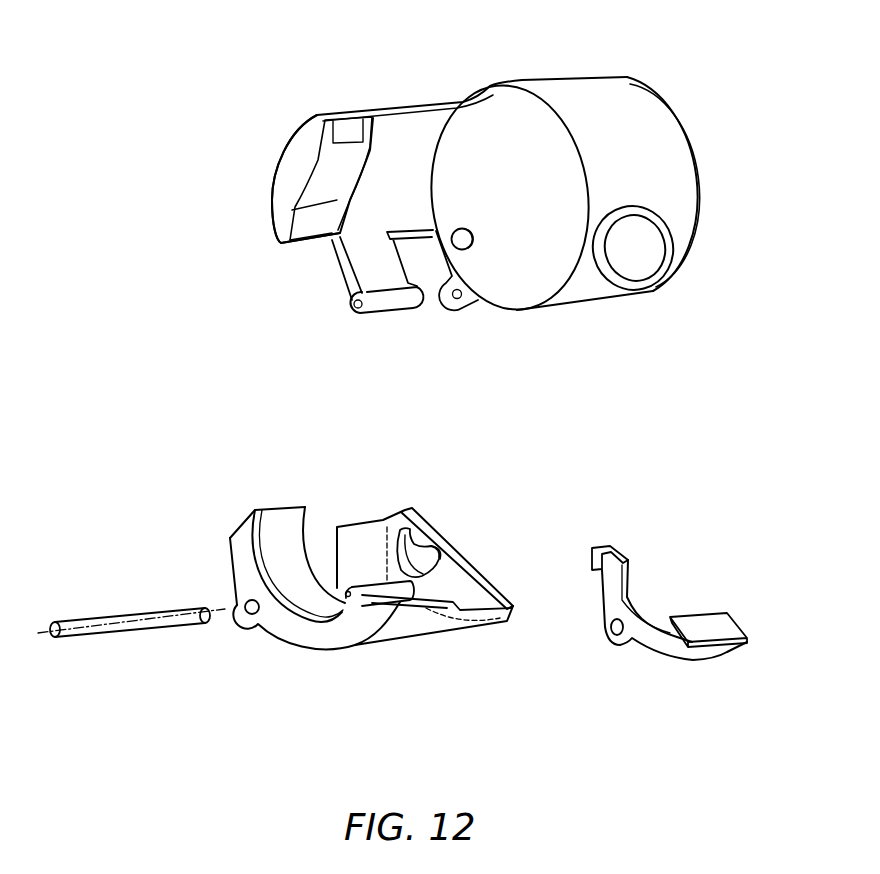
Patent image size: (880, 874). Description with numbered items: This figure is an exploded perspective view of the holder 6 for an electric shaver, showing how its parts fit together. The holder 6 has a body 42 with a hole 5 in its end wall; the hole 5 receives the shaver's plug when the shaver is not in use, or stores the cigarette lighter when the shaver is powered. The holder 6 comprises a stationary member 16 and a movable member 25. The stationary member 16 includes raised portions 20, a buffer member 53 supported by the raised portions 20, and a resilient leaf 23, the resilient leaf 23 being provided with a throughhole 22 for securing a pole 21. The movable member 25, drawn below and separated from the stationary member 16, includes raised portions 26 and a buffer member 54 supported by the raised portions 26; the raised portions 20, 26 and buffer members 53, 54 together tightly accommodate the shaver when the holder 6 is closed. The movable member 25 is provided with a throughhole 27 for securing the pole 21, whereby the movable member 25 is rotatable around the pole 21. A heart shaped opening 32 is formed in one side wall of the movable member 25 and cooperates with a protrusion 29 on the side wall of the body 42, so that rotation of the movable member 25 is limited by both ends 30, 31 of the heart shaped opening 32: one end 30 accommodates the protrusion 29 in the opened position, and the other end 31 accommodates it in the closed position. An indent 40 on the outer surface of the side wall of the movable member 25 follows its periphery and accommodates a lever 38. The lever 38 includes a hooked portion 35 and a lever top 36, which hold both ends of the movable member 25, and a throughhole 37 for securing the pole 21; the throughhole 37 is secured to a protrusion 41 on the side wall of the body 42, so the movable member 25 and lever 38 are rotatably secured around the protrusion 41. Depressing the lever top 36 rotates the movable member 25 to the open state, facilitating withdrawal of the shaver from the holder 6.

The hole 5 is at (642, 247).
The holder 6 is at (640, 110).
The stationary member 16 is at (397, 150).
The raised portions 20 is at (340, 160).
The pole 21 is at (123, 634).
The throughhole 22 is at (352, 316).
The resilient leaf 23 is at (360, 261).
The movable member 25 is at (395, 633).
The raised portions 26 is at (260, 567).
The throughhole 27 is at (349, 590).
The protrusion 29 is at (455, 252).
The end of heart shaped opening 30 is at (405, 531).
The end of heart shaped opening 31 is at (436, 555).
The heart shaped opening 32 is at (420, 568).
The hooked portion 35 is at (600, 548).
The lever top 36 is at (708, 622).
The throughhole 37 is at (615, 637).
The lever 38 is at (647, 657).
The indent 40 is at (460, 612).
The protrusion 41 is at (459, 302).
The body 42 is at (710, 166).
The buffer member 53 is at (337, 157).
The buffer member 54 is at (282, 523).